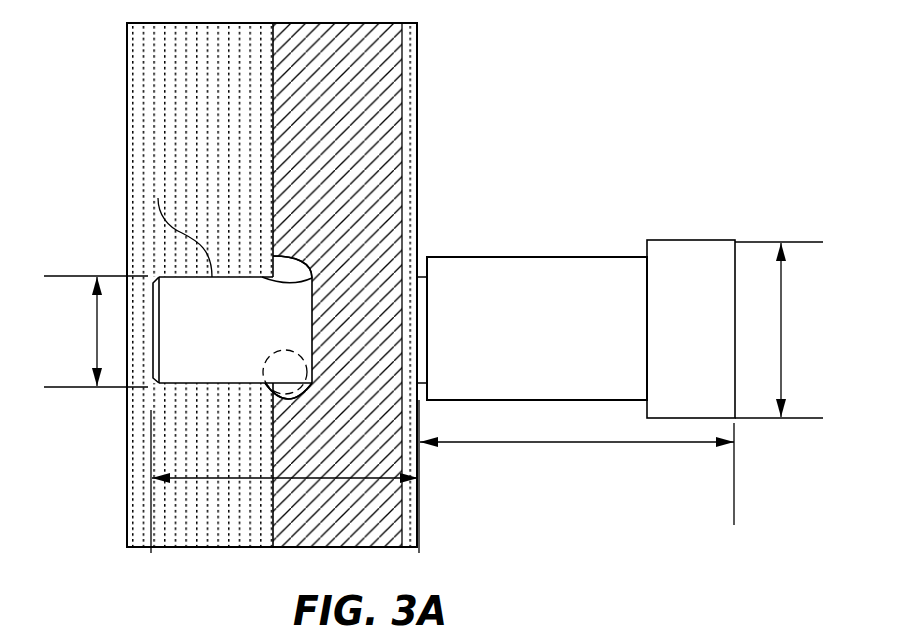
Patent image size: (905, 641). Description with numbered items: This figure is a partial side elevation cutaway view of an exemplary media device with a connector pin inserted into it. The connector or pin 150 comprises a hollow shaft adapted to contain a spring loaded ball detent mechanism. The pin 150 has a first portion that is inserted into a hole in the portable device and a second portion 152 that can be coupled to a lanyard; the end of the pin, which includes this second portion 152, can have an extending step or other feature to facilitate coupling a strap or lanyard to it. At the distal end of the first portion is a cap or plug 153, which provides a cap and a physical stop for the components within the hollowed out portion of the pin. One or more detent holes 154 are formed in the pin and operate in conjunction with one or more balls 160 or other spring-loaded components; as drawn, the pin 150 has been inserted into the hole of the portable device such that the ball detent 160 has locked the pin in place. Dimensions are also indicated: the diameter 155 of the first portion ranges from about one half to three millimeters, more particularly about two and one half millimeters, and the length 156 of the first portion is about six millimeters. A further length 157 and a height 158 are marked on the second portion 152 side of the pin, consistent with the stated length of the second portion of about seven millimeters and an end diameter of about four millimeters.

The connector or pin 150 is at (596, 116).
The second portion 152 is at (684, 253).
The cap or plug 153 is at (162, 276).
The detent holes 154 is at (268, 260).
The diameter 155 is at (96, 305).
The length 156 is at (222, 480).
The connector length 157 is at (490, 443).
The flange height 158 is at (782, 297).
The ball detent 160 is at (284, 383).